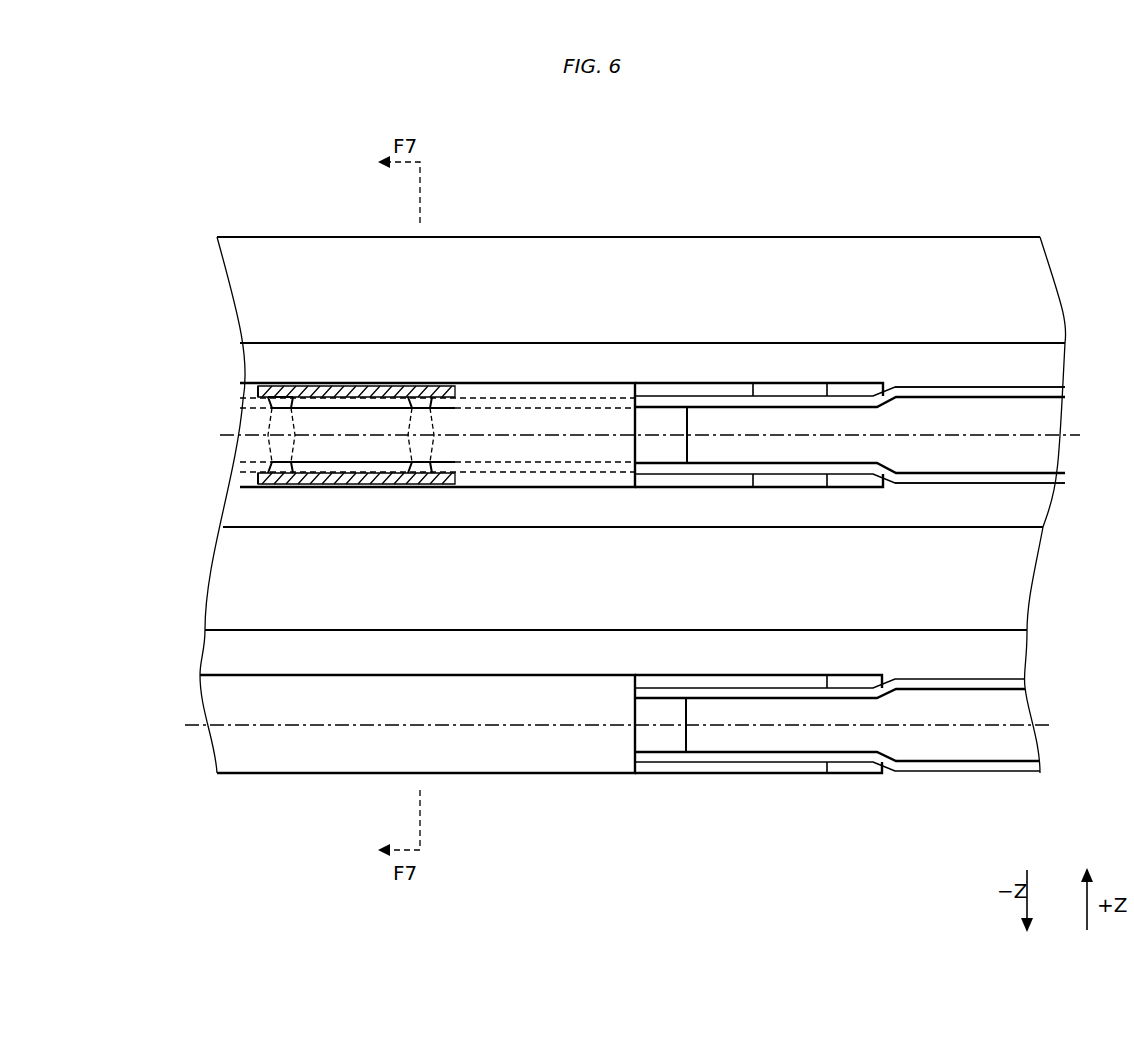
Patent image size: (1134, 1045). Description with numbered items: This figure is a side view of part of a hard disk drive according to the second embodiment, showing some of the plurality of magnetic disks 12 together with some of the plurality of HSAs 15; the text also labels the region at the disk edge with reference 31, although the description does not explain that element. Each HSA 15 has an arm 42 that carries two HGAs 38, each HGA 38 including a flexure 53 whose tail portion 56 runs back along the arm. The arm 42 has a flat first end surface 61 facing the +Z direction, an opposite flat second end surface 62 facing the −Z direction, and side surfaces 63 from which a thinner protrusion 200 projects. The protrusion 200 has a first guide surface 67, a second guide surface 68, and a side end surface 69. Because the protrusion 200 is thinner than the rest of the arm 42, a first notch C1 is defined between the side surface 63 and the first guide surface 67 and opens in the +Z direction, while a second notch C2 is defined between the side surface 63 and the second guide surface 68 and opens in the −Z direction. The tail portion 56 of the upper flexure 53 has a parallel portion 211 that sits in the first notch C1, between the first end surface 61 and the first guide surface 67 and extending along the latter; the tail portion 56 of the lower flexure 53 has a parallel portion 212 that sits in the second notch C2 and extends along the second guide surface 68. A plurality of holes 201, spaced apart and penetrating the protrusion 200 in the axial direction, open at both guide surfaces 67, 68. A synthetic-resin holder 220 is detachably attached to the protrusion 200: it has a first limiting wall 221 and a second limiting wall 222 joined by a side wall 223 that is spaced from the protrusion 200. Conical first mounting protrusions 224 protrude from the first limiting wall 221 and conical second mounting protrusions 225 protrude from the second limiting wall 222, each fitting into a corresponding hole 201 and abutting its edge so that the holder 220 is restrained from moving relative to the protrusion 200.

The magnetic disk 12 is at (923, 263).
The HSA 15 is at (850, 508).
The outer wall 31 is at (1040, 250).
The HGA 38 is at (976, 505).
The arm 42 is at (722, 378).
The flexure 53 is at (976, 505).
The tail portion 56 is at (930, 826).
The first end surface 61 is at (775, 383).
The second end surface 62 is at (763, 488).
The side surface 63 is at (690, 393).
The first guide surface 67 is at (310, 392).
The second guide surface 68 is at (318, 488).
The side end surface 69 is at (355, 422).
The protrusion 200 is at (657, 400).
The hole 201 is at (433, 423).
The parallel portion 211 is at (756, 393).
The parallel portion 212 is at (808, 475).
The holder 220 is at (381, 504).
The first limiting wall 221 is at (380, 390).
The second limiting wall 222 is at (300, 488).
The side wall 223 is at (570, 418).
The first mounting protrusion 224 is at (425, 392).
The second mounting protrusion 225 is at (410, 486).
The first notch C1 is at (807, 378).
The second notch C2 is at (723, 493).